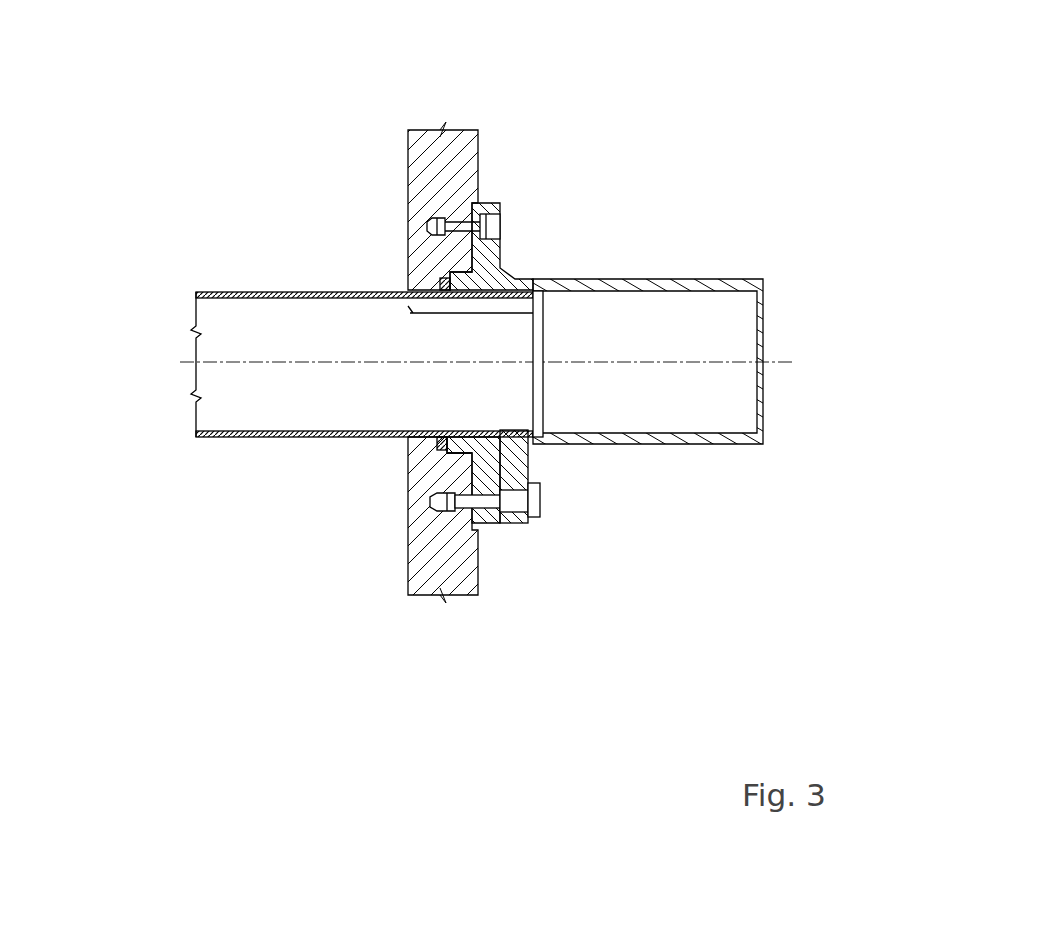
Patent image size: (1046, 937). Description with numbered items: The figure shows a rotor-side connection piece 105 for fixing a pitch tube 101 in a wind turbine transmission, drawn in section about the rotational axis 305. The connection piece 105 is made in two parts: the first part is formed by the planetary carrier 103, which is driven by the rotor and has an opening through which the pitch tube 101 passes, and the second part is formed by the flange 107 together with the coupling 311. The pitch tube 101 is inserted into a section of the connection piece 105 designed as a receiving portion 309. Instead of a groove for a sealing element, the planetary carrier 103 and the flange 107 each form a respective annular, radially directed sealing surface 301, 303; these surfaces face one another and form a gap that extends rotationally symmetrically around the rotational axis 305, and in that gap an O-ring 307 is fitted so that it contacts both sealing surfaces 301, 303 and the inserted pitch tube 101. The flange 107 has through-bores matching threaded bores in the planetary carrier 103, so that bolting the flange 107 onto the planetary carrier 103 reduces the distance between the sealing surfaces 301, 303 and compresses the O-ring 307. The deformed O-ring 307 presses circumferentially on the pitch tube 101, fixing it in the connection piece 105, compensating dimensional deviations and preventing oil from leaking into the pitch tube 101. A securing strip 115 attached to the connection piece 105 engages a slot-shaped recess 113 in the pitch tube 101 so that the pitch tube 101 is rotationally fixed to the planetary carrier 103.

The pitch tube 101 is at (206, 290).
The planetary carrier 103 is at (427, 550).
The connection piece 105 is at (503, 257).
The flange 107 is at (483, 470).
The slot-shaped recess 113 is at (533, 443).
The securing strip 115 is at (537, 463).
The annular sealing surface 301 is at (437, 443).
The annular sealing surface 303 is at (467, 450).
The rotational axis 305 is at (790, 365).
The O-ring 307 is at (445, 285).
The receiving portion 309 is at (472, 313).
The coupling 311 is at (654, 279).